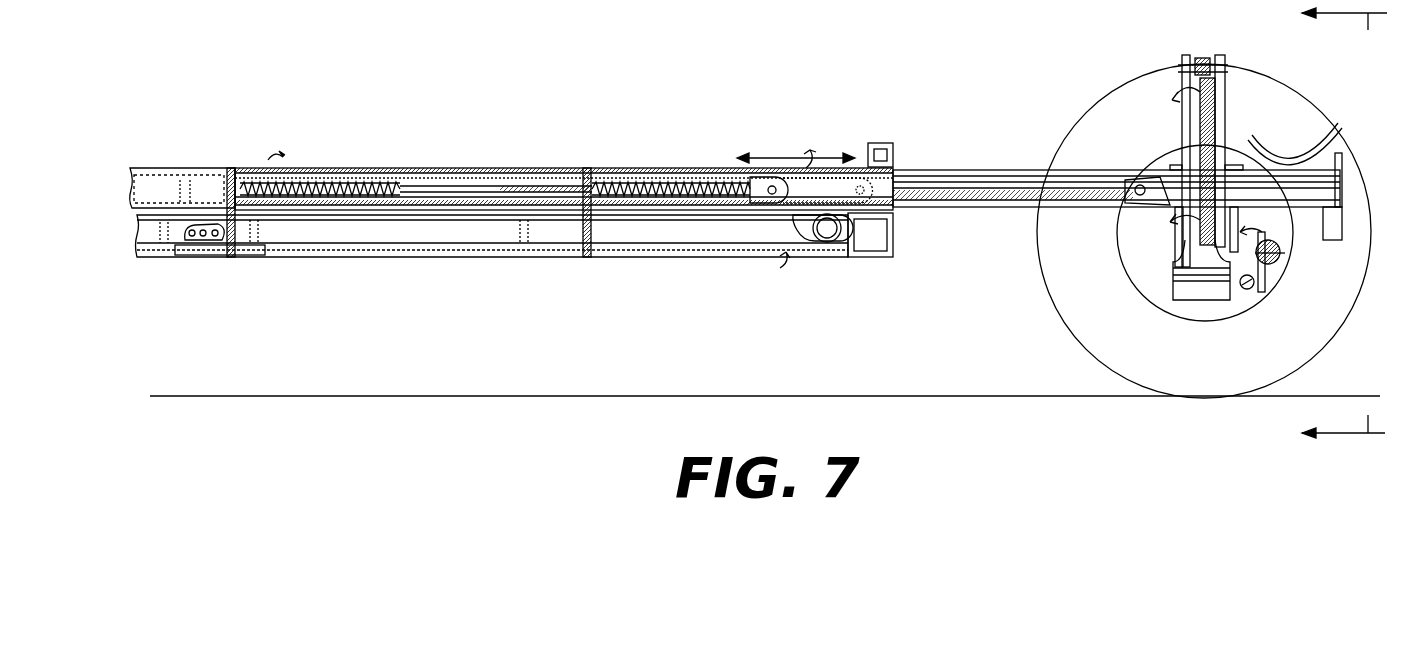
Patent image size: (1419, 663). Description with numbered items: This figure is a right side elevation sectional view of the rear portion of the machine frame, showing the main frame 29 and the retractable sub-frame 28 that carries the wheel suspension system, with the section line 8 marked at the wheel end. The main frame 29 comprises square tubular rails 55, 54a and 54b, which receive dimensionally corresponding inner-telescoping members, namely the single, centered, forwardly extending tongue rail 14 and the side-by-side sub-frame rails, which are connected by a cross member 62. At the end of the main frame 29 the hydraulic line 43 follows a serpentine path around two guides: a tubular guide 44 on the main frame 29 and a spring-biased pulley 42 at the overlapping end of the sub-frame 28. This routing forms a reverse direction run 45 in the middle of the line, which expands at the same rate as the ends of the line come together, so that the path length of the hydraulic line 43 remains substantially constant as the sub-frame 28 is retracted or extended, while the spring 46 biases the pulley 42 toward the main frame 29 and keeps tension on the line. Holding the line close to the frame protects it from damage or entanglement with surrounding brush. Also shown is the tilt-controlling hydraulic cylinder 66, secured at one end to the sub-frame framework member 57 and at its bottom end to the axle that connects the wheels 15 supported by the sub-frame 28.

The tongue rail 14 is at (131, 170).
The square tubular rail 54a is at (398, 168).
The square tubular rail 54b is at (671, 189).
The main frame 29 is at (622, 168).
The spring 46 is at (670, 176).
The spring-biased pulley 42 is at (755, 160).
The retractable sub-frame 28 is at (980, 170).
The tilt-controlling hydraulic cylinder 66 is at (1200, 150).
The sub-frame framework member 57 is at (1222, 112).
The wheel 15 is at (1325, 300).
The cross member 62 is at (223, 257).
The square tubular rail 55 is at (352, 257).
The reverse direction run 45 is at (798, 213).
The hydraulic line 43 is at (803, 247).
The tubular guide 44 is at (843, 258).
The section line 8- 8 is at (1351, 225).